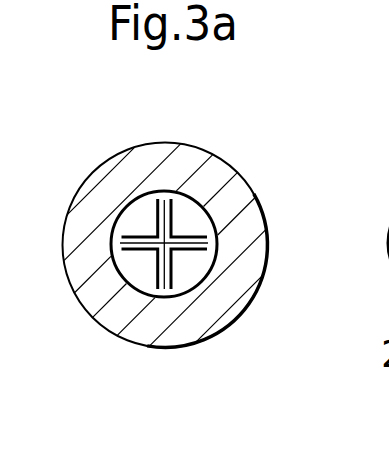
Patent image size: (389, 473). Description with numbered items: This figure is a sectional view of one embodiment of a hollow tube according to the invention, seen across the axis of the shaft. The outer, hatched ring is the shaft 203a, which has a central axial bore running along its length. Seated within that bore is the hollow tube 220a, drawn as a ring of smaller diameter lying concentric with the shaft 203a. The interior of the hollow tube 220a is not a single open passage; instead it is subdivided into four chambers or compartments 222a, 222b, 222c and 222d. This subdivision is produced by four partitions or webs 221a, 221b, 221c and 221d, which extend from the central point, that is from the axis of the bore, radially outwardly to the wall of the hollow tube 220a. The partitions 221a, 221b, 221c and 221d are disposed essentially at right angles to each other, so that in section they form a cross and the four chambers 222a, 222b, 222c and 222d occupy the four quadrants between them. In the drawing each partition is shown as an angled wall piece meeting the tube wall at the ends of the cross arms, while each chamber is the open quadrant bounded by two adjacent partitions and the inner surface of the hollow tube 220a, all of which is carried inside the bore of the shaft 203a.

The shaft 203a is at (222, 180).
The hollow tube 220a is at (195, 283).
The partition 221a is at (167, 268).
The partition 221b is at (135, 256).
The partition 221c is at (149, 222).
The partition 221d is at (207, 235).
The chamber 222a is at (192, 263).
The chamber 222b is at (145, 262).
The chamber 222c is at (128, 228).
The chamber 222d is at (185, 218).